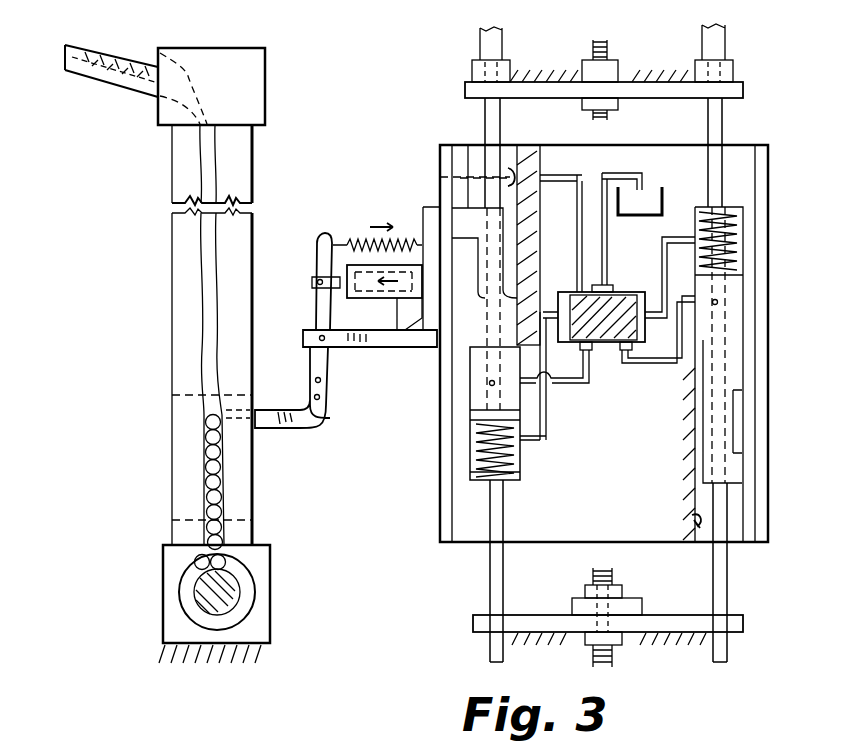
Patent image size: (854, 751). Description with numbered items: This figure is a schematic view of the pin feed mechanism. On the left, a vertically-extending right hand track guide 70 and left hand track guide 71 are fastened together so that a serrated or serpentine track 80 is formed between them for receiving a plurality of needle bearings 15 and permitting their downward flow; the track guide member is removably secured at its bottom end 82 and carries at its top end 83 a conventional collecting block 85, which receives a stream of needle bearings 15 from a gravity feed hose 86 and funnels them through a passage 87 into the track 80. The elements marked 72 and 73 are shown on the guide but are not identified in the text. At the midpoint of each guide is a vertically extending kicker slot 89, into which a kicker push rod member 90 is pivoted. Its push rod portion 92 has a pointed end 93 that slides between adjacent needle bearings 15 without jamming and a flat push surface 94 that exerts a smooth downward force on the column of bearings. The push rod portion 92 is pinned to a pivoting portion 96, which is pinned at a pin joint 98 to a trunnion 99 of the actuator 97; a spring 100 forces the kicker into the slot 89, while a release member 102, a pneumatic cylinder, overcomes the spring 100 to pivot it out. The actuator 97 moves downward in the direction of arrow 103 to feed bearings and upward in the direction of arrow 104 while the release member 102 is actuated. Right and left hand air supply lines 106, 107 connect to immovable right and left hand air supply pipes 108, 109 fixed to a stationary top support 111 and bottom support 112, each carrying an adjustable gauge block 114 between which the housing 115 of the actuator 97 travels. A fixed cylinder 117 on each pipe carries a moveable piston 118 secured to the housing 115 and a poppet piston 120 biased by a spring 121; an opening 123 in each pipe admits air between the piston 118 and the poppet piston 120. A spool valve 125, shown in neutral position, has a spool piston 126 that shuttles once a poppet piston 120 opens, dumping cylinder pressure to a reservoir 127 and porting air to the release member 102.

The needle bearings 15 is at (208, 468).
The right hand track guide 70 is at (256, 276).
The left hand track guide 71 is at (170, 314).
The inner tube 72 is at (207, 183).
The housing walls 73 is at (172, 163).
The serpentine track 80 is at (205, 240).
The bottom end 82 is at (255, 540).
The top end 83 is at (253, 133).
The collecting block 85 is at (258, 50).
The gravity feed hose 86 is at (92, 78).
The passage 87 is at (168, 46).
The kicker slot 89 is at (182, 518).
The kicker push rod member 90 is at (265, 412).
The push rod portion 92 is at (330, 410).
The pointed end 93 is at (202, 412).
The flat push surface 94 is at (274, 428).
The pivoting portion 96 is at (316, 324).
The actuator 97 is at (772, 212).
The pin joint 98 is at (307, 339).
The trunnion 99 is at (395, 347).
The spring 100 is at (353, 240).
The release member 102 is at (395, 300).
The arrow 103 is at (792, 490).
The arrow 104 is at (419, 440).
The right hand air supply line 106 is at (725, 34).
The left hand air supply line 107 is at (480, 40).
The right hand air supply pipe 108 is at (724, 112).
The left hand air supply pipe 109 is at (485, 118).
The top support 111 is at (465, 90).
The bottom support 112 is at (473, 623).
The gauge block 114 is at (633, 598).
The housing 115 is at (635, 145).
The fixed cylinder 117 is at (508, 170).
The piston 118 is at (530, 302).
The poppet piston 120 is at (520, 410).
The spring 121 is at (518, 458).
The opening 123 is at (490, 383).
The spool valve 125 is at (632, 285).
The spool piston 126 is at (607, 350).
The reservoir 127 is at (664, 190).